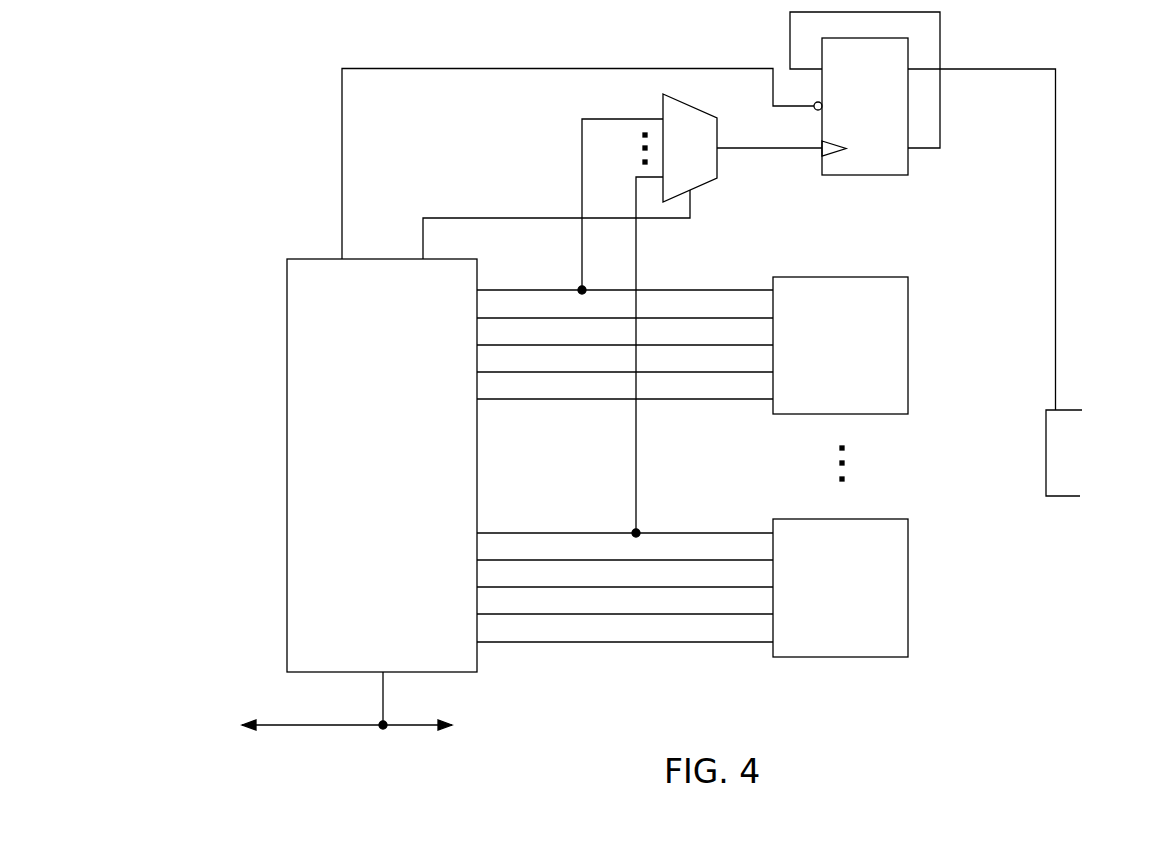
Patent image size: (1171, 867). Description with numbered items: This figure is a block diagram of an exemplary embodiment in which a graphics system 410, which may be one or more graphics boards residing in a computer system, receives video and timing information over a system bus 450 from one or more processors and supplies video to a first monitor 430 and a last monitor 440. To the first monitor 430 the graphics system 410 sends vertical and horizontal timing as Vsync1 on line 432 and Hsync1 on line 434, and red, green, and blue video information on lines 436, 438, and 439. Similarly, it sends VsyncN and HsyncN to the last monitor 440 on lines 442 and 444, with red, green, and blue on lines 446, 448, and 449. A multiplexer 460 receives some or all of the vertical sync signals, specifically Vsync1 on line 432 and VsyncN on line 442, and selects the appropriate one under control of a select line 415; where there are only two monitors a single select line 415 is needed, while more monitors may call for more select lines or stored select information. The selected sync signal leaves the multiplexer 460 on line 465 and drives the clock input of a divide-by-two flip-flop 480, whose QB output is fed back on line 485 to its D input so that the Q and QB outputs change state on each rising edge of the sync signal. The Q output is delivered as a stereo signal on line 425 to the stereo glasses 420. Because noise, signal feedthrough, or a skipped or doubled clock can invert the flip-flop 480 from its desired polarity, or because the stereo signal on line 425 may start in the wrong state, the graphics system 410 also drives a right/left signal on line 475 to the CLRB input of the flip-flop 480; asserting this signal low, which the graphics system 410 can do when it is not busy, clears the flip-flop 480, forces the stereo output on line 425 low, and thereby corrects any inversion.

The graphics system 410 is at (287, 517).
The select line 415 is at (500, 216).
The stereo glasses 420 is at (1054, 497).
The stereo signal line 425 is at (1056, 290).
The first monitor 430 is at (908, 341).
The Vsync1 line 432 is at (662, 290).
The Hsync1 line 434 is at (662, 318).
The red line 436 is at (662, 345).
The green line 438 is at (662, 372).
The blue line 439 is at (662, 399).
The last monitor 440 is at (908, 585).
The VsyncN line 442 is at (662, 533).
The HsyncN line 444 is at (662, 560).
The red line 446 is at (662, 587).
The green line 448 is at (662, 614).
The blue line 449 is at (662, 642).
The system bus 450 is at (347, 727).
The multiplexer 460 is at (695, 108).
The multiplexer output line 465 is at (778, 152).
The right/left signal line 475 is at (342, 138).
The flip-flop 480 is at (882, 177).
The D input line 485 is at (923, 150).